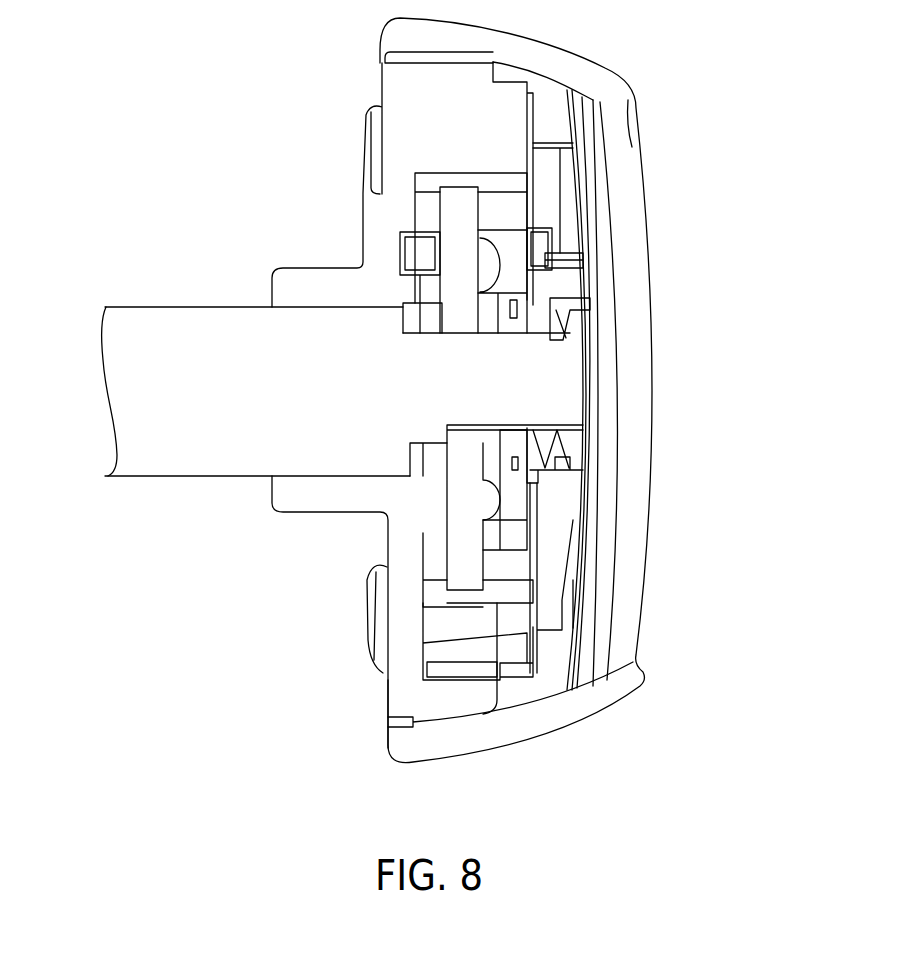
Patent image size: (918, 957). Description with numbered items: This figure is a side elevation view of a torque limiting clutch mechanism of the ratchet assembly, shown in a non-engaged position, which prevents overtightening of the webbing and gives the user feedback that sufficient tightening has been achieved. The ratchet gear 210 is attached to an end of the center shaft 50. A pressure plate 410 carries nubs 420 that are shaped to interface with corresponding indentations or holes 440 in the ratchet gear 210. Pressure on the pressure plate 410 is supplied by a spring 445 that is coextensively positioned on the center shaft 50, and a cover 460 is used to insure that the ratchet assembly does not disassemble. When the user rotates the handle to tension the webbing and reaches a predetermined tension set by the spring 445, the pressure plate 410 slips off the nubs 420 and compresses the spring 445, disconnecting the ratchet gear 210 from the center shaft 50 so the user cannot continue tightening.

The center shaft 50 is at (166, 332).
The ratchet gear 210 is at (513, 240).
The pressure plate 410 is at (462, 562).
The nubs 420 is at (480, 498).
The indentations or holes 440 is at (523, 500).
The spring 445 is at (533, 470).
The cover 460 is at (637, 398).